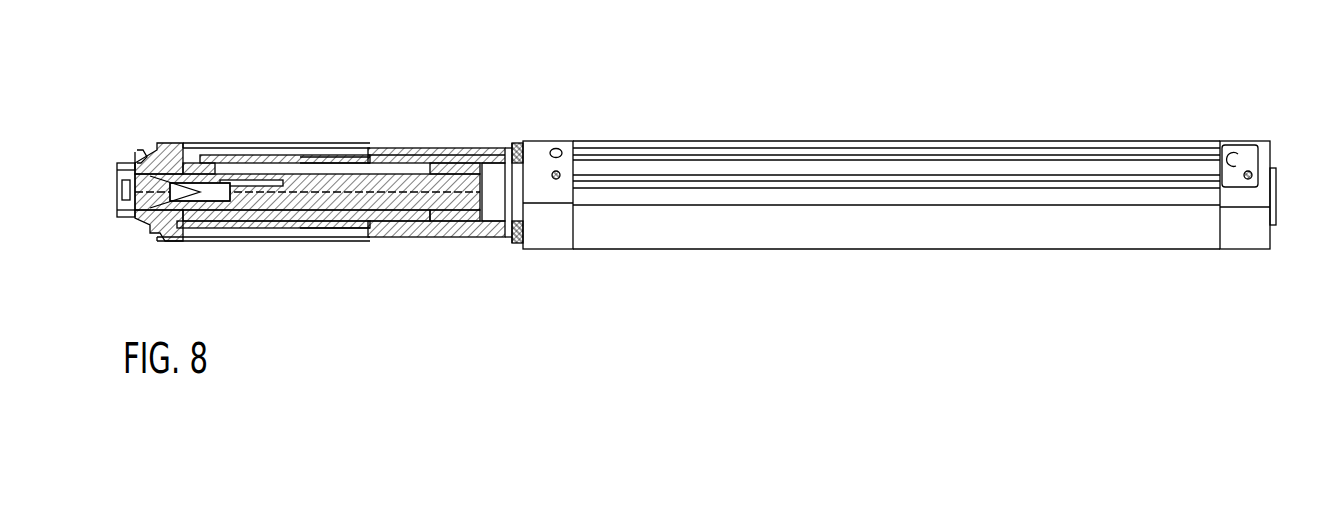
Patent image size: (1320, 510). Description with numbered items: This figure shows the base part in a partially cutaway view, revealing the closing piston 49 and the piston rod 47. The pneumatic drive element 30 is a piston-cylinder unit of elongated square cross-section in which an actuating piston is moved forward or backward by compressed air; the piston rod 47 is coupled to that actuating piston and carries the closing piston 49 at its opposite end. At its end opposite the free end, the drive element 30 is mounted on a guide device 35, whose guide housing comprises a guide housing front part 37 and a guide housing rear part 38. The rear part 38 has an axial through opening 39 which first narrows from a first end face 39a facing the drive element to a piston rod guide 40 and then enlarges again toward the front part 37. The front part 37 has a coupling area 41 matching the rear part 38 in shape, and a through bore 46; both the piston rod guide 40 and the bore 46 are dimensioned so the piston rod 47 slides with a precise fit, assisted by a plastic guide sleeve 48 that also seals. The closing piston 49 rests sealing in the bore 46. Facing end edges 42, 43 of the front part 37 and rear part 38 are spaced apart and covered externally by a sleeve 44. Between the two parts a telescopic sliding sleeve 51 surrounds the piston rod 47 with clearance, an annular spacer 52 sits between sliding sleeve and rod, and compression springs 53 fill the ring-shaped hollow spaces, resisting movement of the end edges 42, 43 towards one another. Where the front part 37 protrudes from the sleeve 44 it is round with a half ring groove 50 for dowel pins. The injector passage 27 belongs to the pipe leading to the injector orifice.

The pneumatic drive element 30 is at (1000, 165).
The guide device 35 is at (478, 255).
The guide housing front part 37 is at (133, 158).
The guide housing rear part 38 is at (438, 150).
The through opening 39 is at (407, 157).
The first end face 39a is at (513, 248).
The piston rod guide 40 is at (470, 157).
The coupling area 41 is at (158, 242).
The end edges of the front part 42 is at (175, 147).
The end edges of the rear part 43 is at (373, 160).
The sleeve 44 is at (242, 145).
The through bore 46 is at (137, 233).
The piston rod 47 is at (262, 212).
The plastic guide sleeve 48 is at (199, 160).
The closing piston 49 is at (118, 190).
The half ring groove 50 is at (137, 157).
The telescopic sliding sleeve 51 is at (298, 160).
The annular spacer 52 is at (312, 160).
The compression springs 53 is at (245, 205).
The injector passage 27 is at (343, 228).